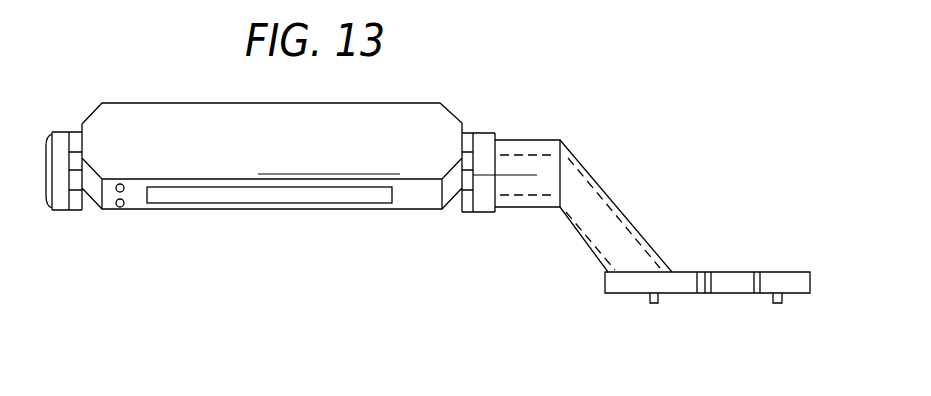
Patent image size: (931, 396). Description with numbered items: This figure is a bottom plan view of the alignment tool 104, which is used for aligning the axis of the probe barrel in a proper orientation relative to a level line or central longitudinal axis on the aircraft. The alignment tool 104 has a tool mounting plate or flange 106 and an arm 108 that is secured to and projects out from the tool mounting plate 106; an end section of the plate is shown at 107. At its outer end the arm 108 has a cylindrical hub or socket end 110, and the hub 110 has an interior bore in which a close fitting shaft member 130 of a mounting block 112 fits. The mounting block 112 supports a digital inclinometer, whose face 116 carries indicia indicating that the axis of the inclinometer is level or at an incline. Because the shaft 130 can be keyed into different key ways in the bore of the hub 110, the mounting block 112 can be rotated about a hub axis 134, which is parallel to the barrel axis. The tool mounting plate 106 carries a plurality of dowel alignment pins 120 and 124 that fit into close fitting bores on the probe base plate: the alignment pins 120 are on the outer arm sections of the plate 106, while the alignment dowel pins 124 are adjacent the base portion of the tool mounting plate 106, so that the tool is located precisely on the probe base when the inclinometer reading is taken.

The alignment tool 104 is at (616, 176).
The tool mounting plate 106 is at (680, 277).
The base plate end section 107 is at (737, 282).
The arm 108 is at (590, 213).
The hub 110 is at (545, 148).
The mounting block 112 is at (83, 212).
The face 116 is at (280, 207).
The alignment pins 120 is at (772, 305).
The alignment dowel pins 124 is at (647, 300).
The shaft member 130 is at (520, 155).
The hub axis 134 is at (520, 176).